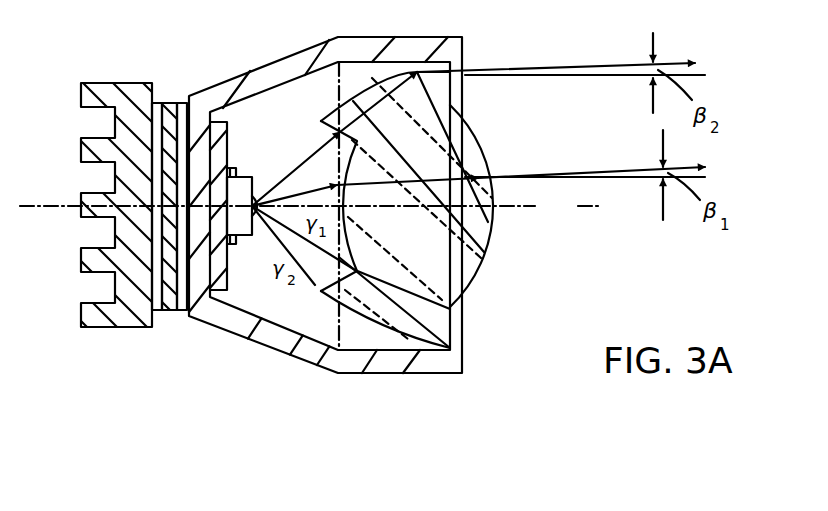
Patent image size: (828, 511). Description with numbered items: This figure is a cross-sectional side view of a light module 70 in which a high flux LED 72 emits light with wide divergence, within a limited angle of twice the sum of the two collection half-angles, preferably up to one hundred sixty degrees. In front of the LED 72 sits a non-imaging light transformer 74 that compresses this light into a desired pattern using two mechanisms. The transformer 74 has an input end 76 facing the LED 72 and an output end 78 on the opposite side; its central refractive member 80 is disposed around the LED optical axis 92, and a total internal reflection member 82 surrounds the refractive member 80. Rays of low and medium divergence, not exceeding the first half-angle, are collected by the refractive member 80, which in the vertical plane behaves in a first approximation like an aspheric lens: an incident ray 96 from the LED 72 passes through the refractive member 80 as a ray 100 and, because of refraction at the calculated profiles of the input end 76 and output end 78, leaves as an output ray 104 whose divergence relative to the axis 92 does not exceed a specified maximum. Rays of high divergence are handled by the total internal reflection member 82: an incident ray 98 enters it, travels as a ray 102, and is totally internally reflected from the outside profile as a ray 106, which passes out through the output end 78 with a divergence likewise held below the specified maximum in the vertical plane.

The light module 70 is at (222, 328).
The LED 72 is at (256, 178).
The non-imaging light transformer 74 is at (408, 335).
The input end 76 is at (316, 286).
The output end 78 is at (467, 128).
The refractive member 80 is at (435, 240).
The total internal reflection member 82 is at (440, 318).
The LED optical axis 92 is at (310, 206).
The incident ray 96 is at (308, 190).
The incident ray 98 is at (277, 172).
The ray 100 is at (462, 168).
The ray 102 is at (395, 82).
The output ray 104 is at (607, 168).
The reflected ray 106 is at (578, 65).